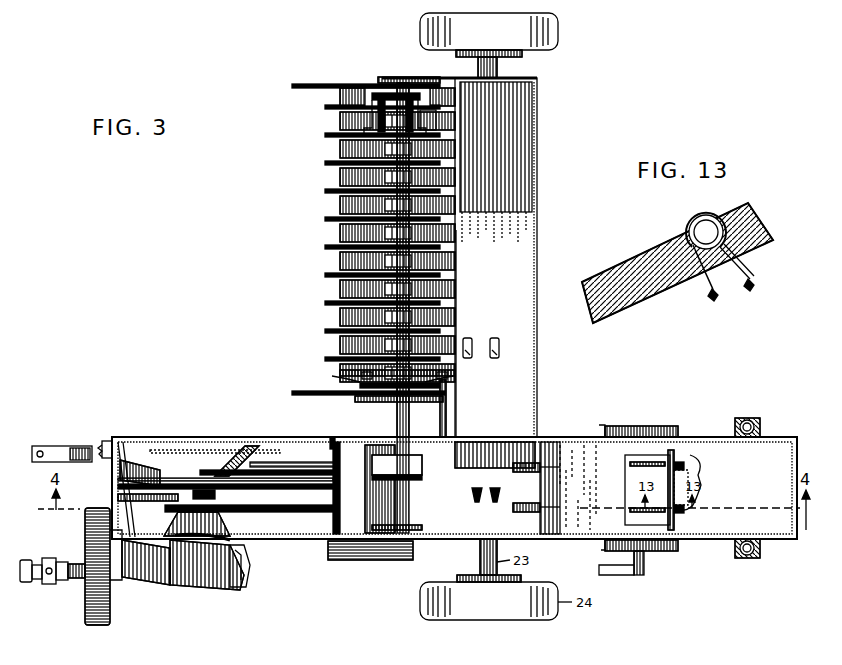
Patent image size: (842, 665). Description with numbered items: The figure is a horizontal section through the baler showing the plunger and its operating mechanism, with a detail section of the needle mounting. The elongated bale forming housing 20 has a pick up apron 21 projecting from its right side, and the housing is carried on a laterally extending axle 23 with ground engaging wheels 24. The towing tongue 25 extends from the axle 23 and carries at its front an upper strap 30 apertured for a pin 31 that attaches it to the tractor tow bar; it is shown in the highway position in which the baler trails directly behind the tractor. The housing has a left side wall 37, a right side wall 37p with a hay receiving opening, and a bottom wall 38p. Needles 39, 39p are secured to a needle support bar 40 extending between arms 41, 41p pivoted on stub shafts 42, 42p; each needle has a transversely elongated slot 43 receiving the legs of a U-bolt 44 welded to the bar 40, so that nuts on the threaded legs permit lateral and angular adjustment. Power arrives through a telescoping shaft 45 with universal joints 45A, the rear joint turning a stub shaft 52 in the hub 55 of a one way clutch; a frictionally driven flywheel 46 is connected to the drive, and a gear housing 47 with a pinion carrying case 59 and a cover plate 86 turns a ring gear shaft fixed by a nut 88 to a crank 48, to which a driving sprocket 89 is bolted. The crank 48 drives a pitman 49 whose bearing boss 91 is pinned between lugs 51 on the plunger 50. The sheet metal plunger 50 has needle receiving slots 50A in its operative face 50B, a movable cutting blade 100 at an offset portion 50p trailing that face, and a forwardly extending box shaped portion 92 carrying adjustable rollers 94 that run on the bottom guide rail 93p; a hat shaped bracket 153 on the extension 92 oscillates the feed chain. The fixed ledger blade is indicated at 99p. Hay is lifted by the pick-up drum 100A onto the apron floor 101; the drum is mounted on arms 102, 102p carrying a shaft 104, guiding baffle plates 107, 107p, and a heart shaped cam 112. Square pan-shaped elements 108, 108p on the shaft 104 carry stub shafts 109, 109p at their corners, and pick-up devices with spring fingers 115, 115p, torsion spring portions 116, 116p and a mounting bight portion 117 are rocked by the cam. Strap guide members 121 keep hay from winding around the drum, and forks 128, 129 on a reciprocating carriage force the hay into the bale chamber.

In FIG. 3, the bale forming housing 20 is at (135, 438).
In FIG. 3, the pick up apron 21 is at (537, 133).
In FIG. 3, the axle 23 is at (497, 70).
In FIG. 3, the ground engaging wheels 24 is at (558, 24).
In FIG. 3, the towing tongue 25 is at (106, 441).
In FIG. 3, the upper strap 30 is at (62, 446).
In FIG. 3, the pin 31 is at (41, 451).
In FIG. 3, the left side wall 37 is at (265, 539).
In FIG. 3, the right side wall 37p is at (205, 437).
In FIG. 3, the bottom wall 38p is at (310, 539).
In FIG. 3, the needle 39 is at (630, 512).
In FIG. 13, the needle 39 is at (640, 307).
In FIG. 3, the needle 39p is at (630, 466).
In FIG. 3, the needle support bar 40 is at (678, 525).
In FIG. 13, the needle support bar 40 is at (689, 230).
In FIG. 3, the arm 41 is at (655, 551).
In FIG. 3, the arm 41p is at (648, 426).
In FIG. 3, the stub shaft 42 is at (600, 550).
In FIG. 3, the stub shaft 42p is at (610, 426).
In FIG. 13, the transversely elongated slot 43 is at (752, 283).
In FIG. 3, the U-bolt 44 is at (672, 460).
In FIG. 13, the U-bolt 44 is at (695, 214).
In FIG. 3, the telescoping shaft 45 is at (26, 560).
In FIG. 3, the universal joint 45A is at (50, 558).
In FIG. 3, the flywheel 46 is at (97, 625).
In FIG. 3, the gear housing 47 is at (240, 587).
In FIG. 3, the crank 48 is at (118, 497).
In FIG. 3, the pitman 49 is at (150, 478).
In FIG. 3, the plunger 50 is at (395, 500).
In FIG. 3, the offset portion 50p is at (380, 451).
In FIG. 3, the needle receiving slot 50A is at (410, 515).
In FIG. 3, the operative face 50B is at (410, 470).
In FIG. 3, the lug 51 is at (348, 520).
In FIG. 3, the stub shaft 52 is at (70, 580).
In FIG. 3, the hub 55 is at (84, 585).
In FIG. 3, the pinion carrying case 59 is at (150, 585).
In FIG. 3, the cover plate 86 is at (200, 590).
In FIG. 3, the nut 88 is at (200, 490).
In FIG. 3, the driving sprocket 89 is at (222, 506).
In FIG. 3, the bearing boss 91 is at (342, 488).
In FIG. 3, the box shaped portion 92 is at (330, 440).
In FIG. 3, the bottom guide rail 93p is at (290, 489).
In FIG. 3, the roller 94 is at (200, 470).
In FIG. 3, the stop block 99p is at (495, 455).
In FIG. 3, the movable cutting blade 100 is at (409, 446).
In FIG. 3, the pick-up drum 100A is at (338, 233).
In FIG. 3, the apron floor 101 is at (537, 240).
In FIG. 3, the arm 102 is at (395, 398).
In FIG. 3, the arm 102p is at (406, 80).
In FIG. 3, the shaft 104 is at (409, 418).
In FIG. 3, the guiding baffle plate 107 is at (310, 398).
In FIG. 3, the guiding baffle plate 107p is at (300, 84).
In FIG. 3, the pan-shaped element 108 is at (405, 396).
In FIG. 3, the pan-shaped element 108p is at (385, 96).
In FIG. 3, the stub shaft 109 is at (370, 384).
In FIG. 3, the stub shaft 109p is at (446, 386).
In FIG. 3, the heart shaped cam 112 is at (440, 392).
In FIG. 3, the spring finger 115 is at (335, 133).
In FIG. 3, the spring finger 115p is at (335, 107).
In FIG. 3, the torsion spring portion 116 is at (408, 176).
In FIG. 3, the torsion spring portion 116p is at (408, 148).
In FIG. 3, the mounting bight portion 117 is at (438, 128).
In FIG. 3, the strap guide member 121 is at (340, 153).
In FIG. 3, the fork 128 is at (500, 492).
In FIG. 3, the fork 129 is at (496, 338).
In FIG. 3, the hat shaped bracket 153 is at (258, 458).